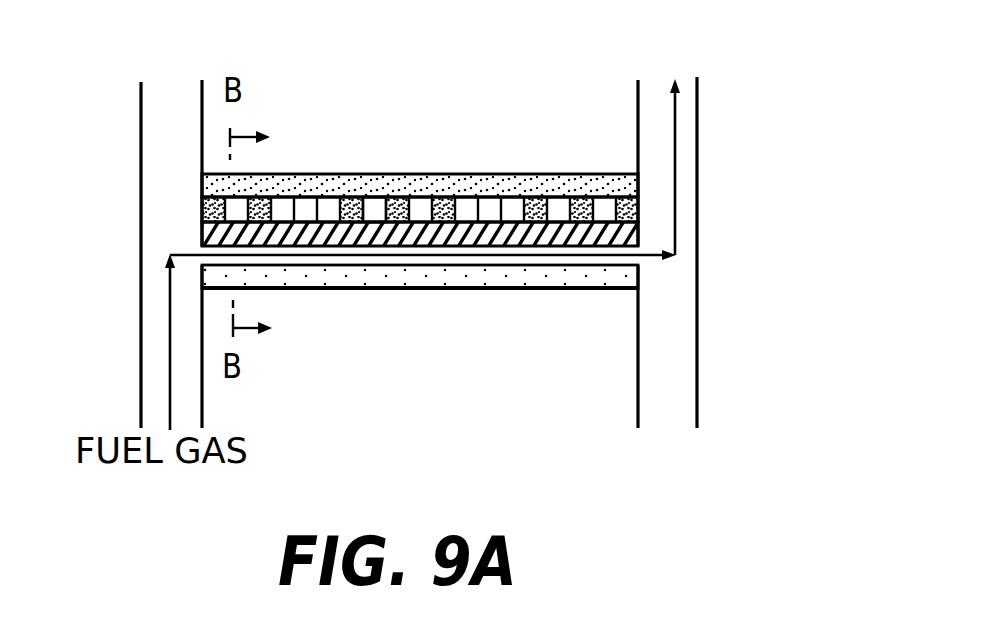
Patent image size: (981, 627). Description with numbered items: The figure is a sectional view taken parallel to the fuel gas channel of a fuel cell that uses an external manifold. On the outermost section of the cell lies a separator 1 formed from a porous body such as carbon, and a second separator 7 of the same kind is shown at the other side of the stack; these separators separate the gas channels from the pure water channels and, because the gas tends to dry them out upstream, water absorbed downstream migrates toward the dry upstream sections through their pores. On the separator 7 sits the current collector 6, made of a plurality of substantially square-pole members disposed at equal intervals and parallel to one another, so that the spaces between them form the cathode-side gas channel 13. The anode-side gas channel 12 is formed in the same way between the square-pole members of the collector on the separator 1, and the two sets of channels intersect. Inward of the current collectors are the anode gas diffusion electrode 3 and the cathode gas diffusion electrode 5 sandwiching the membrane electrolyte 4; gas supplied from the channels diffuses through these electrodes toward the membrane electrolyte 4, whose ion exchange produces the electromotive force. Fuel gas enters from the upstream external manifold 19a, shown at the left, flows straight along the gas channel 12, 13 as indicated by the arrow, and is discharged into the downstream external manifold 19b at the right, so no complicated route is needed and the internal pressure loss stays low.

The separator 1 is at (563, 289).
The gas diffusion electrode 3 is at (421, 298).
The membrane electrolyte 4 is at (421, 298).
The gas diffusion electrode 5 is at (283, 224).
The current collector 6 is at (393, 212).
The separator 7 is at (434, 190).
The gas channel 12 is at (434, 258).
The gas channel 13 is at (372, 215).
The upstream external manifold 19a is at (153, 357).
The downstream external manifold 19b is at (637, 112).